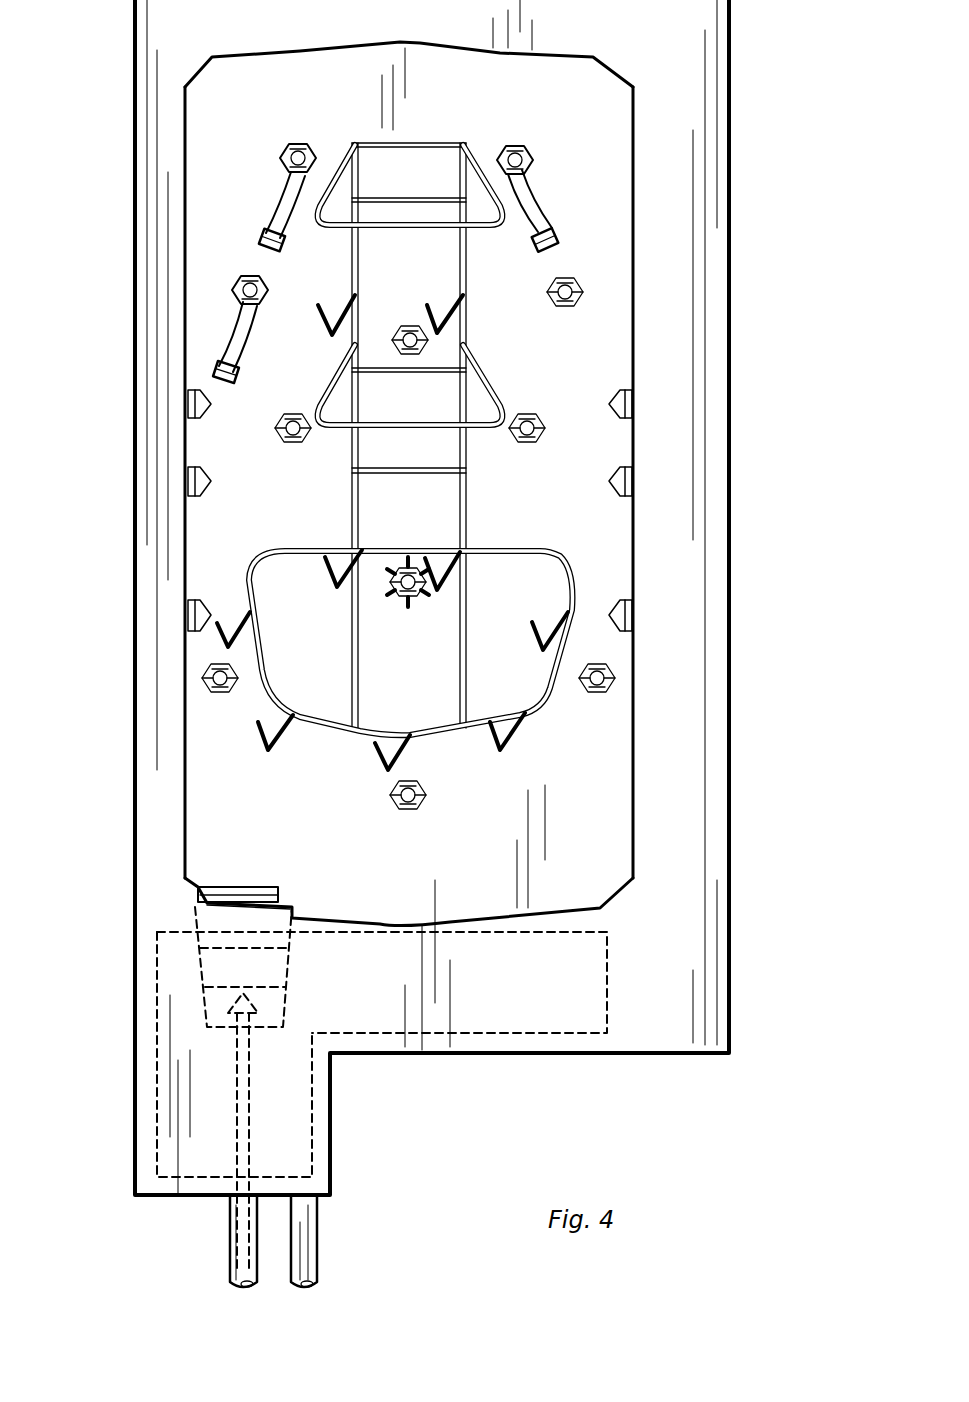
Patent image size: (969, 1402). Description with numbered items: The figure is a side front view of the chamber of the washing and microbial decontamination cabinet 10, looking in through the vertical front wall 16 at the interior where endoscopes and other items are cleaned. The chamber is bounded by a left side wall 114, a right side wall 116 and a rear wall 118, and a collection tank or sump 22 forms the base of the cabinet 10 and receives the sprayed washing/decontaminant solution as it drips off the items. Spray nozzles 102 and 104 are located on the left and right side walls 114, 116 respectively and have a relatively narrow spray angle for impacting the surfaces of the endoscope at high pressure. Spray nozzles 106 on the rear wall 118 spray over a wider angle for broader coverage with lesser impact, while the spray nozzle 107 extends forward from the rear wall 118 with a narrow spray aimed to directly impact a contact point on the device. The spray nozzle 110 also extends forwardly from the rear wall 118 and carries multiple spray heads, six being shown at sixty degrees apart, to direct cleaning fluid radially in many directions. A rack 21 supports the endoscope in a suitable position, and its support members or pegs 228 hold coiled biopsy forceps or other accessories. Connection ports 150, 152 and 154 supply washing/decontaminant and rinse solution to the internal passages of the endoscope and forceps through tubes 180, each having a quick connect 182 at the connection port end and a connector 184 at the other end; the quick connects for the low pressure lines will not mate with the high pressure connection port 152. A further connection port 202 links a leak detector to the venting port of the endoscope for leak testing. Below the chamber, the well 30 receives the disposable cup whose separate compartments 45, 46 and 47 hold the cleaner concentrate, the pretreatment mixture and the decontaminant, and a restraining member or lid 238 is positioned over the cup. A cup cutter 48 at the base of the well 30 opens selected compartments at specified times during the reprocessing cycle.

The washing and microbial decontamination cabinet 10 is at (748, 112).
The vertical front wall 16 is at (690, 825).
The rack 21 is at (460, 498).
The collection tank or sump 22 is at (520, 1005).
The well 30 is at (190, 1135).
The compartment 45 is at (262, 1003).
The compartment 46 is at (255, 968).
The compartment 47 is at (305, 915).
The cup cutter 48 is at (245, 1105).
The spray nozzle 102 is at (208, 415).
The spray nozzle 104 is at (612, 605).
The spray nozzle 106 is at (405, 325).
The spray nozzle 107 is at (294, 445).
The spray nozzle 110 is at (410, 600).
The left side wall 114 is at (185, 762).
The right side wall 116 is at (633, 798).
The rear wall 118 is at (338, 87).
The connection port 150 is at (286, 152).
The high pressure connection port 152 is at (246, 282).
The connection port 154 is at (415, 805).
The tube 180 is at (283, 208).
The quick connect 182 is at (530, 158).
The connector 184 is at (550, 240).
The connection port 202 is at (553, 300).
The support members 228 is at (343, 305).
The restraining member or lid 238 is at (255, 887).